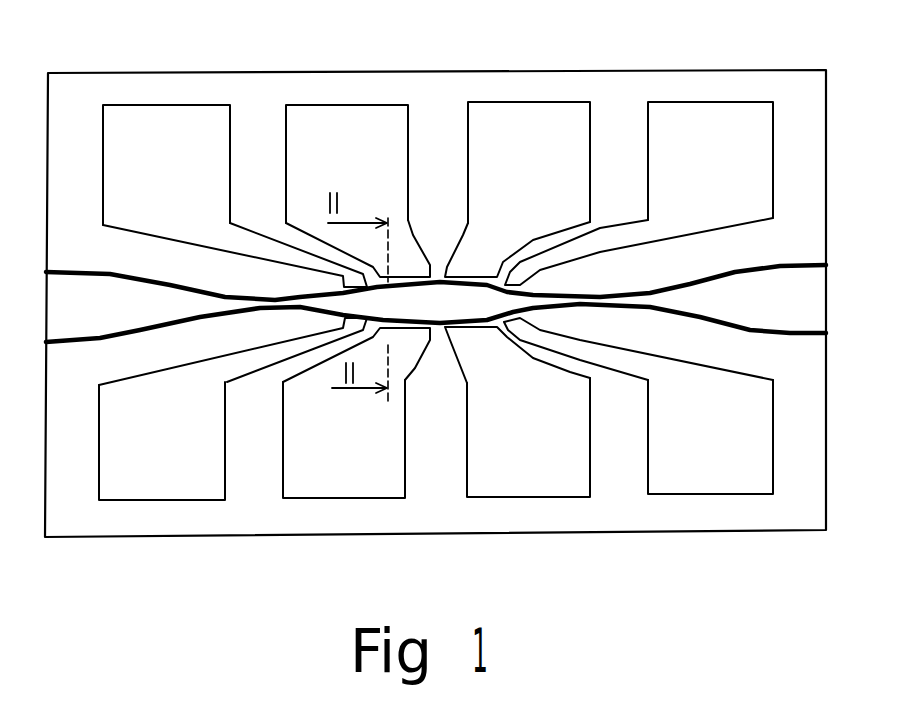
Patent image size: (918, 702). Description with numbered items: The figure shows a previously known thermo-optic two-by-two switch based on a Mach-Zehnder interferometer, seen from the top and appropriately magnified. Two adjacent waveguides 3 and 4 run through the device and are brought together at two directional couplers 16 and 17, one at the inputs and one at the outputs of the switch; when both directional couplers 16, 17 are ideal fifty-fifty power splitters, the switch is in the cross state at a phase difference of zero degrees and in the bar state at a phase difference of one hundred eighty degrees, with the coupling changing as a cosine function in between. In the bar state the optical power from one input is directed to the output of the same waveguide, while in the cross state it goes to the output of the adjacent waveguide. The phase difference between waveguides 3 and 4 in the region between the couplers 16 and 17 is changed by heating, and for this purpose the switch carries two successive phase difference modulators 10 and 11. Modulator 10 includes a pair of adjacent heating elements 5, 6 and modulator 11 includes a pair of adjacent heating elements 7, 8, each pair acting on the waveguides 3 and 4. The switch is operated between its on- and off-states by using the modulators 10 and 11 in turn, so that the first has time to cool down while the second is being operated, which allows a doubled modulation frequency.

The waveguide 3 is at (343, 280).
The waveguide 4 is at (340, 322).
The heating element 5 is at (428, 268).
The heating element 6 is at (422, 328).
The heating element 7 is at (452, 265).
The heating element 8 is at (473, 322).
The phase difference modulator 10 is at (404, 196).
The phase difference modulator 11 is at (490, 226).
The directional coupler 16 is at (265, 282).
The directional coupler 17 is at (617, 281).